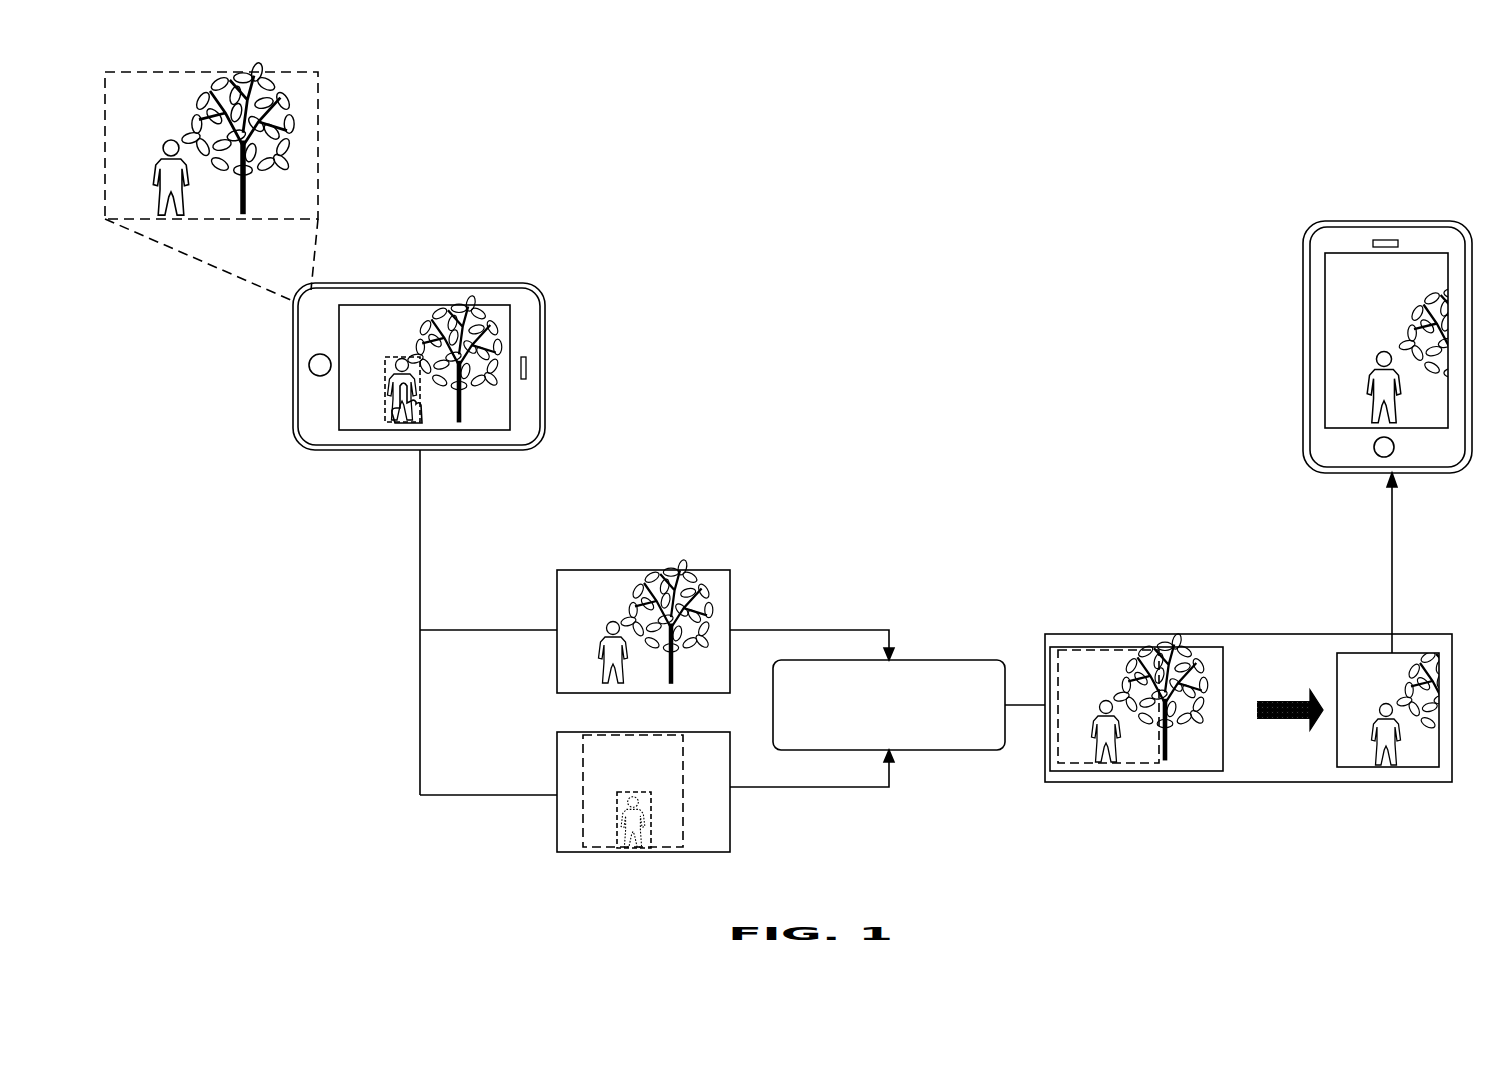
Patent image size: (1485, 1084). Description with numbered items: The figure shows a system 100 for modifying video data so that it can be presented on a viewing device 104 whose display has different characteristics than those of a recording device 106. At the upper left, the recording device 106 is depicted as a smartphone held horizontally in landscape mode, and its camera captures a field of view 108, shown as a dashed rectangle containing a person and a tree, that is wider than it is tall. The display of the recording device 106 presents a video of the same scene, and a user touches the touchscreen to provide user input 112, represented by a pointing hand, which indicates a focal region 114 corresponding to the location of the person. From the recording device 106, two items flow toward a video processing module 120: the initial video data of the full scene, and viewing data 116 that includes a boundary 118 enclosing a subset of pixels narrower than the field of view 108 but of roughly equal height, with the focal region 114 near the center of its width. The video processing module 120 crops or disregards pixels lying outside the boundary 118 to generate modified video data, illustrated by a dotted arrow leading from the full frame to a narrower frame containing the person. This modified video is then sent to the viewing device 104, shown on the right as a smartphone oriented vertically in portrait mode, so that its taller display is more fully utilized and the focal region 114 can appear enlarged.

The system 100 is at (1340, 100).
The viewing device 104 is at (1369, 221).
The recording device 106 is at (543, 300).
The field of view 108 is at (318, 145).
The user input 112 is at (422, 423).
The focal region 114 is at (387, 387).
The viewing data 116 is at (557, 810).
The boundary 118 is at (583, 822).
The video processing module 120 is at (946, 730).